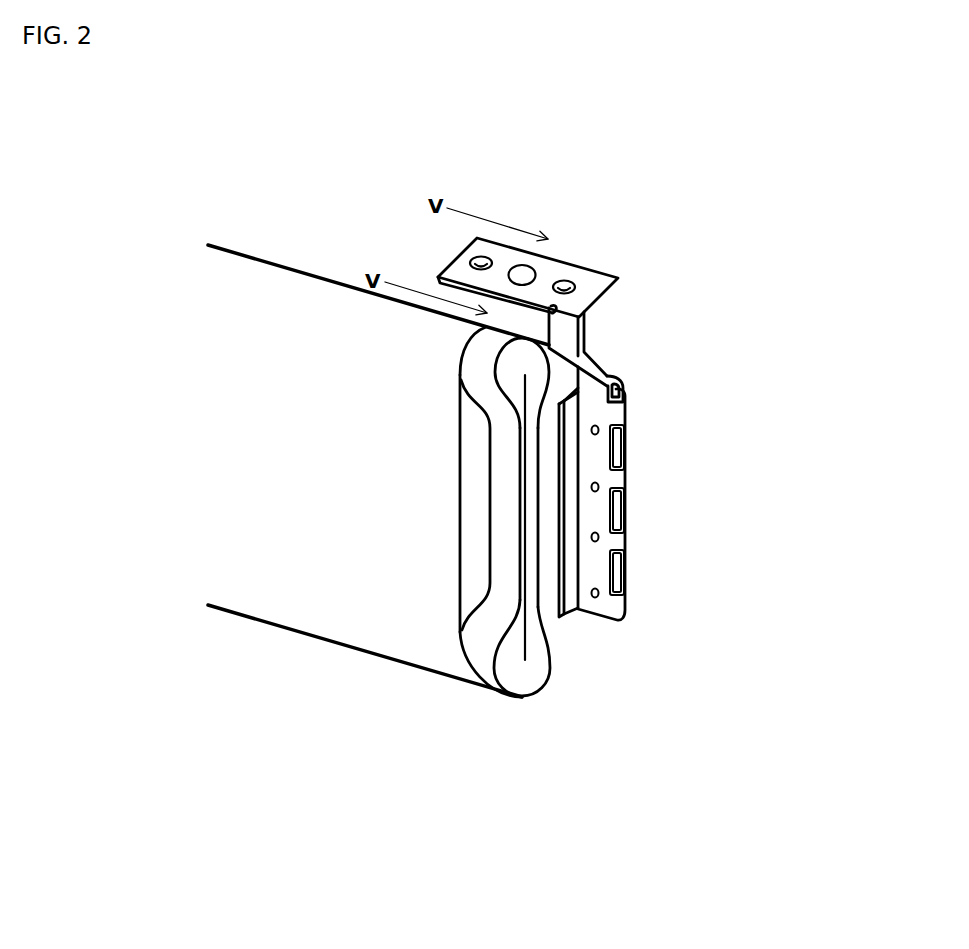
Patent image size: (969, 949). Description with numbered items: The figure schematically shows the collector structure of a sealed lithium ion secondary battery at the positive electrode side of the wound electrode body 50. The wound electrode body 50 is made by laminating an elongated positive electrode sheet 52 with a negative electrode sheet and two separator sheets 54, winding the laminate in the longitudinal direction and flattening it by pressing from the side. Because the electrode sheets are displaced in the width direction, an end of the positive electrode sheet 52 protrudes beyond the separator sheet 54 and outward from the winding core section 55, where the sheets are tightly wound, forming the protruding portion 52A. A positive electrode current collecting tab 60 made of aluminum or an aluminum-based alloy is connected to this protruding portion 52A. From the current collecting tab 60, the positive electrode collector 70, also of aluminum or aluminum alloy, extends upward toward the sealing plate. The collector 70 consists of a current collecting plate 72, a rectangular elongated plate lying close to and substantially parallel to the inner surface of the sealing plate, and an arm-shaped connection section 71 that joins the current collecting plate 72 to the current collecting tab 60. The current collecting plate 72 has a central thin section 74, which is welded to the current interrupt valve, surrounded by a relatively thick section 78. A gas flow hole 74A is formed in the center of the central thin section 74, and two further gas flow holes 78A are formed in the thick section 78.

The wound electrode body 50 is at (285, 590).
The separator sheet 54 is at (378, 494).
The winding core section 55 is at (360, 618).
The positive electrode sheet 52 is at (484, 690).
The protruding portion of the positive electrode sheet 52A is at (506, 565).
The positive electrode collector 70 is at (633, 262).
The current collecting plate 72 is at (613, 295).
The thick section 78 is at (458, 276).
The gas flow holes 78A is at (481, 258).
The central thin section 74 is at (530, 264).
The gas flow hole 74A is at (525, 276).
The arm-shaped connection section 71 is at (590, 358).
The positive electrode current collecting tab 60 is at (628, 532).